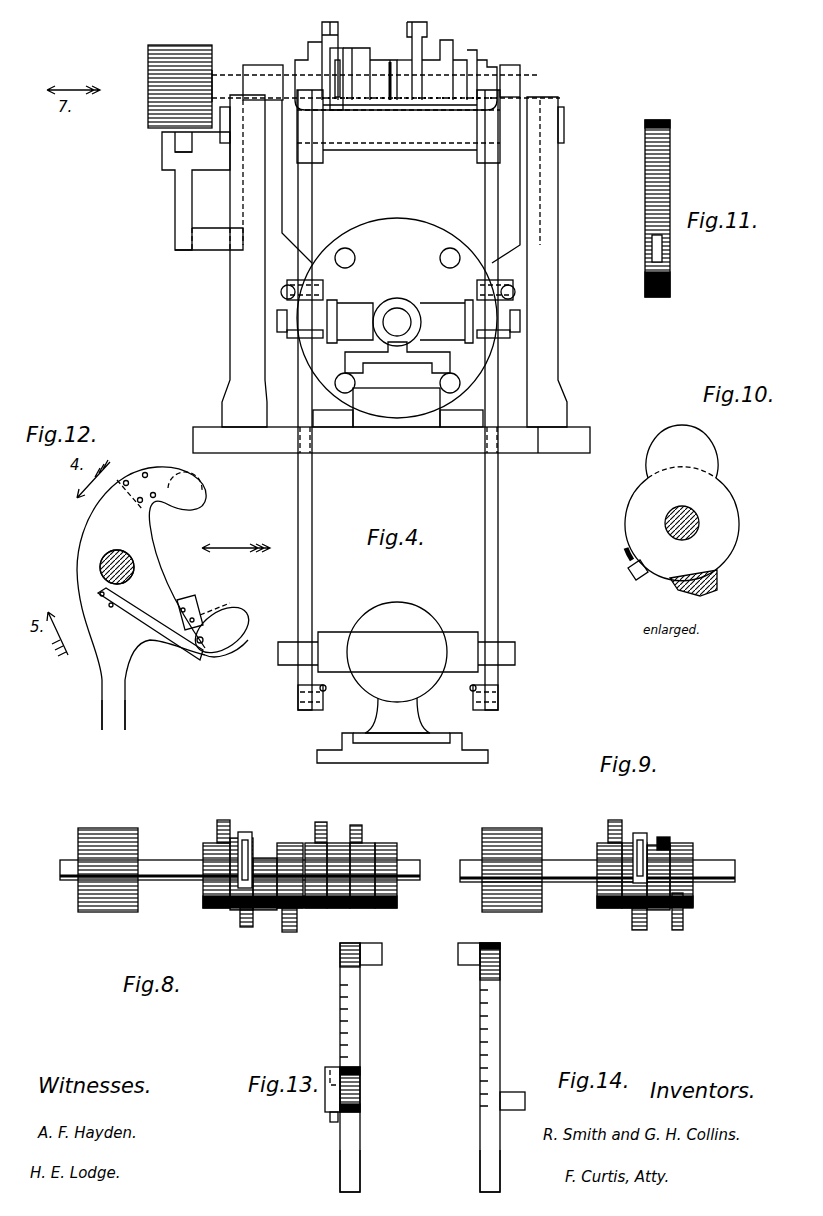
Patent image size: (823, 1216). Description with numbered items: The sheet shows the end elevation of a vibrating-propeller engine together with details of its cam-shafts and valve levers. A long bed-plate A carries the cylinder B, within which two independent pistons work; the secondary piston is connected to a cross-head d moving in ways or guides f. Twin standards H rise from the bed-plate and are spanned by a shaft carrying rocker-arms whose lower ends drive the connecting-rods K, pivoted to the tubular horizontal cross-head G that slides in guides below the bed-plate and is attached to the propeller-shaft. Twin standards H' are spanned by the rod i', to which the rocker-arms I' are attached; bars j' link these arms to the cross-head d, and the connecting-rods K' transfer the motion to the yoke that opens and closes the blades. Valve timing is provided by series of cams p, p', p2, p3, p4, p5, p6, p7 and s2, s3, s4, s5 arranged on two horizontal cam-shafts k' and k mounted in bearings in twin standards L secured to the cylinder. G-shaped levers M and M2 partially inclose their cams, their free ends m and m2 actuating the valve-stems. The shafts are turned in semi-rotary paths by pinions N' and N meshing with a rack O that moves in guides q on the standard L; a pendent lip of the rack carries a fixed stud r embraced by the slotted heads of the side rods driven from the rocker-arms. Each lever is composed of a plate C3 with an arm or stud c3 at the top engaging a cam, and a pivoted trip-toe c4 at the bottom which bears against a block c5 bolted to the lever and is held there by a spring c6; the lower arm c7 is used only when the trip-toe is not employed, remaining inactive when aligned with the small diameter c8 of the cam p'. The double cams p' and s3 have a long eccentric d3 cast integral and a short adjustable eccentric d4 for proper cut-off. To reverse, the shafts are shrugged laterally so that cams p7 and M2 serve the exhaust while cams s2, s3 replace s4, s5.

In FIG. 4, the pinion N' is at (180, 76).
In FIG. 8, the pinion N' is at (108, 856).
In FIG. 4, the cam-shaft k' is at (386, 63).
In FIG. 12, the cam-shaft k' is at (88, 567).
In FIG. 10, the cam-shaft k' is at (688, 511).
In FIG. 8, the cam-shaft k' is at (240, 858).
In FIG. 4, the G-shaped lever M is at (317, 52).
In FIG. 13, the G-shaped lever M is at (365, 1050).
In FIG. 4, the G-shaped lever M2 is at (433, 51).
In FIG. 14, the G-shaped lever M2 is at (502, 1000).
In FIG. 4, the cam p is at (321, 79).
In FIG. 8, the cam p is at (208, 881).
In FIG. 4, the double cam p' is at (303, 65).
In FIG. 8, the double cam p' is at (235, 890).
In FIG. 4, the cam p2 is at (356, 60).
In FIG. 8, the cam p2 is at (268, 910).
In FIG. 4, the cam p3 is at (378, 70).
In FIG. 8, the cam p3 is at (286, 852).
In FIG. 4, the cam p4 is at (406, 71).
In FIG. 8, the cam p4 is at (315, 908).
In FIG. 4, the cam p5 is at (437, 70).
In FIG. 8, the cam p5 is at (340, 908).
In FIG. 4, the cam p6 is at (457, 80).
In FIG. 8, the cam p6 is at (365, 908).
In FIG. 4, the cam p7 is at (482, 66).
In FIG. 8, the cam p7 is at (392, 845).
In FIG. 4, the rod i' is at (398, 126).
In FIG. 4, the guides q is at (164, 155).
In FIG. 4, the rack O is at (193, 191).
In FIG. 4, the fixed stud r is at (209, 239).
In FIG. 4, the twin standards L is at (298, 207).
In FIG. 4, the twin standards H' is at (244, 261).
In FIG. 4, the twin standards H is at (547, 262).
In FIG. 4, the cylinder B is at (397, 318).
In FIG. 4, the cross-head d is at (400, 322).
In FIG. 4, the bars j' is at (402, 324).
In FIG. 4, the ways or guides f is at (397, 364).
In FIG. 4, the bed-plate A is at (391, 440).
In FIG. 4, the rocker-arms I' is at (398, 400).
In FIG. 4, the tubular horizontal cross-head G is at (396, 682).
In FIG. 4, the connecting-rods K is at (319, 704).
In FIG. 4, the connecting-rods K' is at (470, 704).
In FIG. 12, the plate C3 is at (141, 598).
In FIG. 13, the plate C3 is at (348, 1027).
In FIG. 12, the arm or stud c3 is at (204, 493).
In FIG. 13, the arm or stud c3 is at (370, 967).
In FIG. 12, the trip-toe c4 is at (235, 606).
In FIG. 13, the trip-toe c4 is at (330, 1100).
In FIG. 12, the block c5 is at (190, 612).
In FIG. 12, the spring c6 is at (130, 622).
In FIG. 13, the spring c6 is at (333, 1122).
In FIG. 12, the lower arm c7 is at (230, 638).
In FIG. 10, the small diameter c8 is at (627, 504).
In FIG. 8, the small diameter c8 is at (244, 832).
In FIG. 12, the free end m is at (113, 715).
In FIG. 13, the free end m is at (350, 1171).
In FIG. 14, the free end m2 is at (502, 1171).
In FIG. 11, the long eccentric d3 is at (660, 148).
In FIG. 10, the long eccentric d3 is at (682, 451).
In FIG. 11, the short adjustable eccentric d4 is at (643, 293).
In FIG. 10, the short adjustable eccentric d4 is at (706, 590).
In FIG. 8, the short adjustable eccentric d4 is at (250, 838).
In FIG. 9, the short adjustable eccentric d4 is at (643, 833).
In FIG. 9, the cam s2 is at (600, 900).
In FIG. 11, the double cam s3 is at (657, 208).
In FIG. 10, the double cam s3 is at (682, 524).
In FIG. 9, the double cam s3 is at (626, 908).
In FIG. 9, the cam s4 is at (660, 910).
In FIG. 9, the cam s5 is at (682, 845).
In FIG. 9, the pinion N is at (512, 856).
In FIG. 9, the cam-shaft k is at (597, 865).